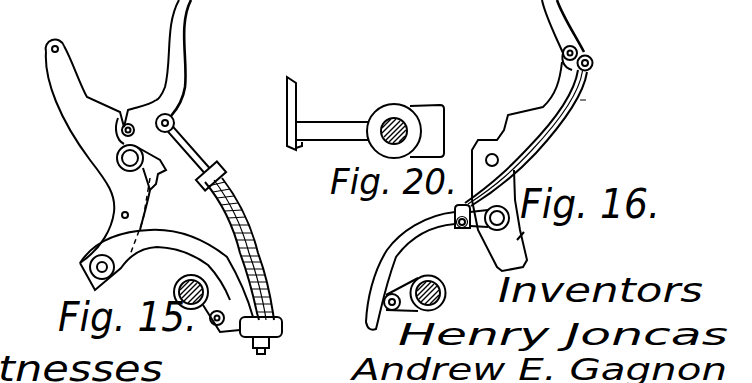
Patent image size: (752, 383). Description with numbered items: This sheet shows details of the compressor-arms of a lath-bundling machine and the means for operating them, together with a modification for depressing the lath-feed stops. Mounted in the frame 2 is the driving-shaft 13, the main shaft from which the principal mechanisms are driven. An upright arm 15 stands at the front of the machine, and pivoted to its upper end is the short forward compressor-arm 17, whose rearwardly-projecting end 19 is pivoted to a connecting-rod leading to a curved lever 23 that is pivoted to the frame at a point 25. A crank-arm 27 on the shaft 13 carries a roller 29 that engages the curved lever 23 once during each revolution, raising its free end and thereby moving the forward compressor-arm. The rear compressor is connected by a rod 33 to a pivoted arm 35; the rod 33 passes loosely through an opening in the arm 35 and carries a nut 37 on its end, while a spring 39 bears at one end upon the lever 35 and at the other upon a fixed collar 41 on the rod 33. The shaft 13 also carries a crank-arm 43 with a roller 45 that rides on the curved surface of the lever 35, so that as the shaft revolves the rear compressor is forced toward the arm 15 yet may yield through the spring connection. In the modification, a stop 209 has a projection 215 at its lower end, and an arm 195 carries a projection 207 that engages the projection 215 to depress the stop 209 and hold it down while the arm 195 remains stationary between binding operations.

In FIG. 15, the frame 2 is at (115, 199).
In FIG. 16, the frame 2 is at (533, 260).
In FIG. 15, the driving-shaft 13 is at (180, 290).
In FIG. 20, the driving-shaft 13 is at (395, 126).
In FIG. 16, the driving-shaft 13 is at (449, 293).
In FIG. 15, the upright arm 15 is at (65, 72).
In FIG. 16, the upright arm 15 is at (557, 80).
In FIG. 16, the forward compressor-arm 17 is at (562, 23).
In FIG. 16, the rearwardly-projecting end 19 is at (589, 54).
In FIG. 16, the curved lever 23 is at (478, 235).
In FIG. 16, the pivot point 25 is at (524, 236).
In FIG. 16, the crank-arm 27 is at (573, 108).
In FIG. 16, the roller 29 is at (383, 299).
In FIG. 15, the rod 33 is at (193, 142).
In FIG. 15, the pivoted arm 35 is at (167, 237).
In FIG. 15, the nut 37 is at (183, 54).
In FIG. 15, the spring 39 is at (256, 215).
In FIG. 15, the fixed collar 41 is at (222, 167).
In FIG. 15, the crank-arm 43 is at (200, 322).
In FIG. 15, the roller 45 is at (244, 341).
In FIG. 20, the arm 195 is at (432, 112).
In FIG. 20, the projection 207 is at (323, 132).
In FIG. 20, the stop 209 is at (297, 93).
In FIG. 20, the projection 215 is at (296, 147).